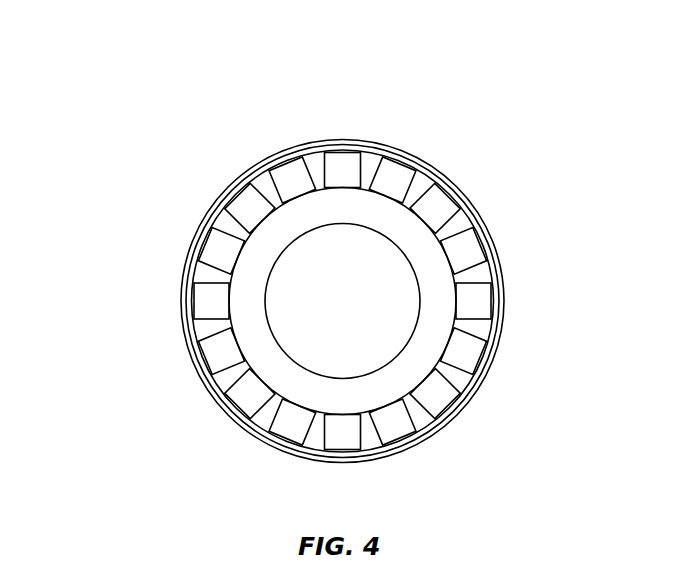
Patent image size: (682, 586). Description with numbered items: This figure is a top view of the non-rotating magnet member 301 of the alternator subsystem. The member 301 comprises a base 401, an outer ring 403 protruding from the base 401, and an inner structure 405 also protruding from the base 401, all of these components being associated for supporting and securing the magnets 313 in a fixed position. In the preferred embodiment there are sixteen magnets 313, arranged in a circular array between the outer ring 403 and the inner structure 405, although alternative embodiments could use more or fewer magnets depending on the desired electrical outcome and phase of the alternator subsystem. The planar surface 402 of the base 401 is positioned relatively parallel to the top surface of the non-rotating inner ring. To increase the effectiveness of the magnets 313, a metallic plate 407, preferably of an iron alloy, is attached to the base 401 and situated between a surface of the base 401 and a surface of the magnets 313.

The non-rotating magnet member 301 is at (160, 103).
The base 401 is at (212, 205).
The planar surface 402 is at (503, 273).
The outer ring 403 is at (187, 270).
The inner structure 405 is at (255, 365).
The metallic plate 407 is at (452, 225).
The magnets 313 is at (395, 182).